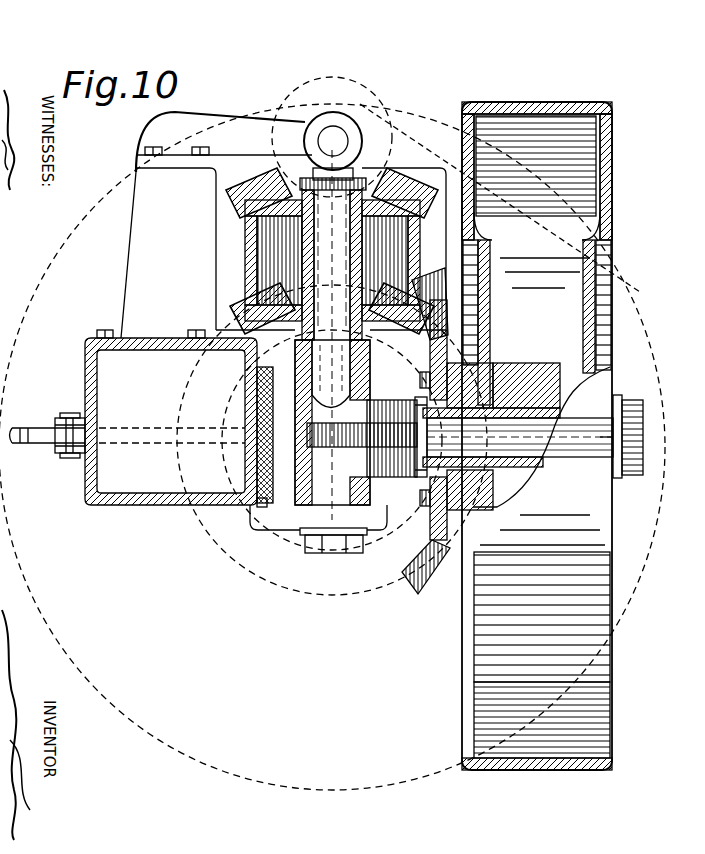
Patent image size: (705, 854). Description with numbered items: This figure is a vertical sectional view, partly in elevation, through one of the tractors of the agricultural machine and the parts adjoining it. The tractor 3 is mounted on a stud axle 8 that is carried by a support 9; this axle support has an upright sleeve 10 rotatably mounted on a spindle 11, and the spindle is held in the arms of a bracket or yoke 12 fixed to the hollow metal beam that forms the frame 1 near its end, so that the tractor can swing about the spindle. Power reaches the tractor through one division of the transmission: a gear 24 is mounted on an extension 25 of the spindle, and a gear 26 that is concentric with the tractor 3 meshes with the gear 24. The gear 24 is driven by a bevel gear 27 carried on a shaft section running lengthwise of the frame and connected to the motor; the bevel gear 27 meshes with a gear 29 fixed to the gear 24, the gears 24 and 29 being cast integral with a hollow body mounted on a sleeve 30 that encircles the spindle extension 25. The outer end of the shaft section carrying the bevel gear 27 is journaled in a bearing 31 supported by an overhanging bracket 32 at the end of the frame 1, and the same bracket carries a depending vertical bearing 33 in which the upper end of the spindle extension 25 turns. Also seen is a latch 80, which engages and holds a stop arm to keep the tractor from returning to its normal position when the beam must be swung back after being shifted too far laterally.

The frame 1 is at (98, 388).
The tractor 3 is at (517, 436).
The stud axle 8 is at (512, 427).
The support 9 is at (400, 483).
The upright sleeve 10 is at (370, 360).
The spindle 11 is at (336, 380).
The bracket or yoke 12 is at (236, 525).
The gear 24 is at (240, 300).
The extension of the spindle 25 is at (340, 266).
The gear 26 is at (438, 297).
The bevel gear 27 is at (392, 133).
The gear 29 is at (236, 198).
The sleeve 30 is at (316, 252).
The bearing 31 is at (355, 130).
The overhanging bracket 32 is at (234, 128).
The depending vertical bearing 33 is at (366, 178).
The latch 80 is at (22, 432).